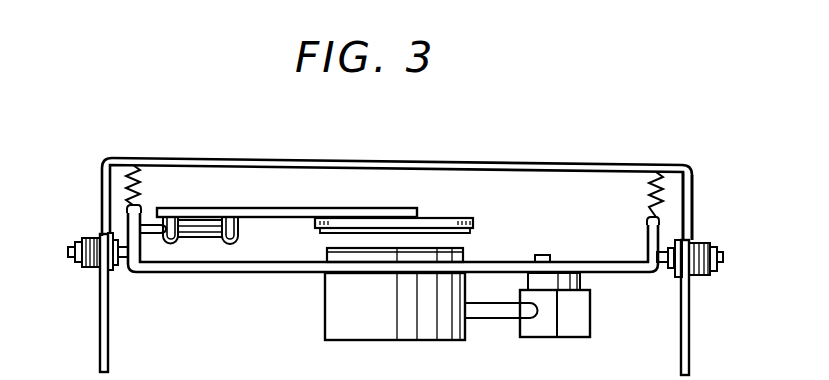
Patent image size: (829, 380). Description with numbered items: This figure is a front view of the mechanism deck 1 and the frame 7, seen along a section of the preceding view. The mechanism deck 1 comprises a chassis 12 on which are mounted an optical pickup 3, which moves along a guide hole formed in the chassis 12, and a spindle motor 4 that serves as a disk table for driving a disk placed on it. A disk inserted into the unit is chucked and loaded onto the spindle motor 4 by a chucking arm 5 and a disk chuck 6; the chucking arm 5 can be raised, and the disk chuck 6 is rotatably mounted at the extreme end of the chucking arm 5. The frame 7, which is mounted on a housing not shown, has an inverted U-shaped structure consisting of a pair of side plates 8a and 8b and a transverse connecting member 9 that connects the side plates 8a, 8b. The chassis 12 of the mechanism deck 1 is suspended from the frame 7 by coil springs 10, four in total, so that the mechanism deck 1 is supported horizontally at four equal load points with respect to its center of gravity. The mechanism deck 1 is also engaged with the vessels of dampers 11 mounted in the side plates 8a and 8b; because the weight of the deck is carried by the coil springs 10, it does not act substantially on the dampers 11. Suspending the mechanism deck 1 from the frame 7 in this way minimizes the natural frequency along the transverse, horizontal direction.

The mechanism deck 1 is at (413, 170).
The optical pickup 3 is at (574, 313).
The spindle motor 4 is at (325, 307).
The chucking arm 5 is at (282, 210).
The disk chuck 6 is at (461, 216).
The frame 7 is at (701, 200).
The side plate 8a is at (102, 313).
The side plate 8b is at (681, 343).
The transverse connecting member 9 is at (391, 160).
The coil spring 10 is at (140, 168).
The damper 11 is at (84, 230).
The chassis 12 is at (208, 265).